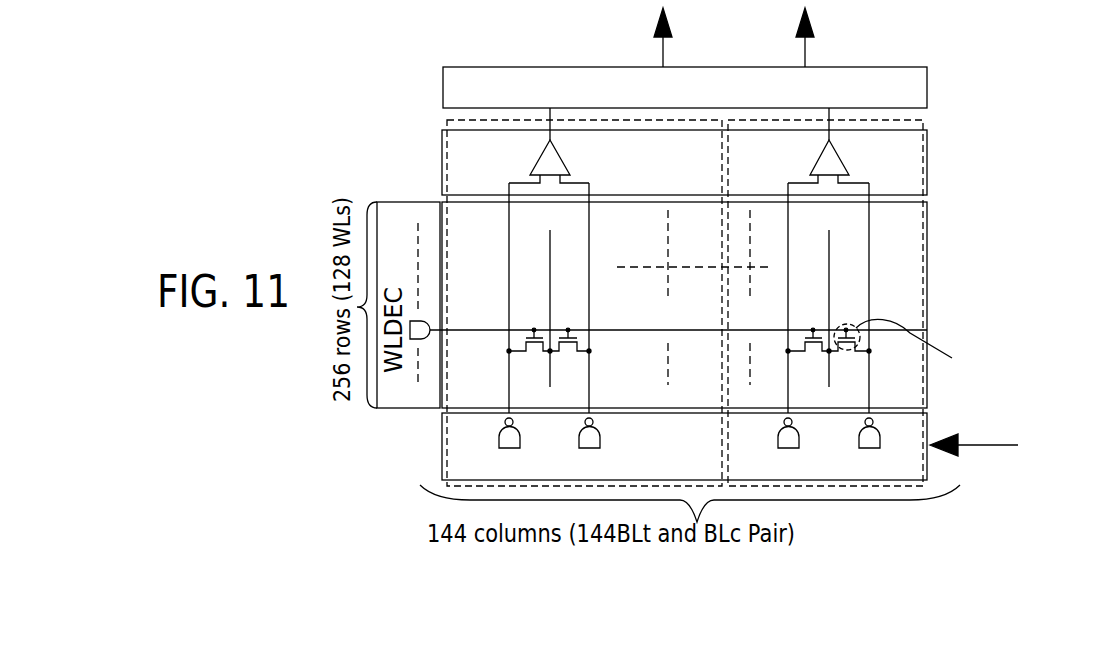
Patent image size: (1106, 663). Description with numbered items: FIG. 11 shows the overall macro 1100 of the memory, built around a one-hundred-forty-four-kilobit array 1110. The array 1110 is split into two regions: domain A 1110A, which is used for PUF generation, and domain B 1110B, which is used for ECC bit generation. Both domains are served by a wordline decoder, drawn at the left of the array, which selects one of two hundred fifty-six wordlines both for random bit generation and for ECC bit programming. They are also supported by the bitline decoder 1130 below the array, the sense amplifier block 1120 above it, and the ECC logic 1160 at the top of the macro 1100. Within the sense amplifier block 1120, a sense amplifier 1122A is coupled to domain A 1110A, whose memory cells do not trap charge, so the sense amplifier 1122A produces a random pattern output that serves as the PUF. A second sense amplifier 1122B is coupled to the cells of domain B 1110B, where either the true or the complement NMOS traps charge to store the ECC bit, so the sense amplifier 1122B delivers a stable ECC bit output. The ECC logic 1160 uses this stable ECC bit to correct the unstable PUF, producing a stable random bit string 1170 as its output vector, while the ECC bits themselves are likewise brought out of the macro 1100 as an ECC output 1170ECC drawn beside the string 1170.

The overall macro 1100 is at (967, 83).
The 144 Kb array 1110 is at (927, 297).
The domain A 1110A is at (447, 165).
The domain B 1110B is at (927, 162).
The sense amplifier block 1120 is at (684, 151).
The sense amplifier 1122A is at (543, 160).
The sense amplifier 1122B is at (822, 160).
The bitline decoder 1130 is at (684, 446).
The ECC logic 1160 is at (685, 87).
The stable random bit string 1170 is at (664, 53).
The ECC data output 1170ECC is at (806, 53).